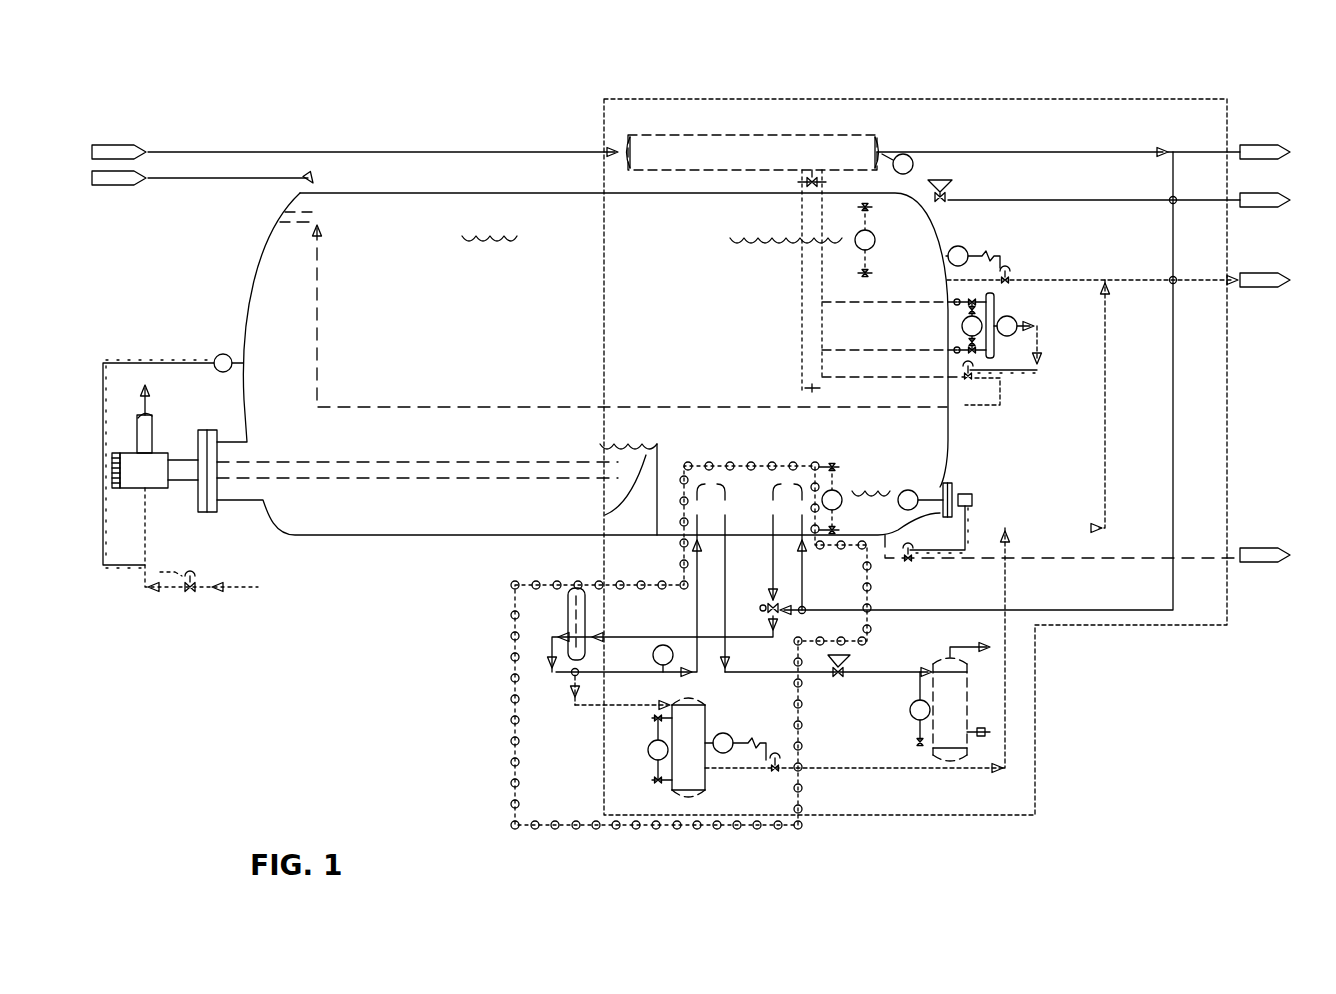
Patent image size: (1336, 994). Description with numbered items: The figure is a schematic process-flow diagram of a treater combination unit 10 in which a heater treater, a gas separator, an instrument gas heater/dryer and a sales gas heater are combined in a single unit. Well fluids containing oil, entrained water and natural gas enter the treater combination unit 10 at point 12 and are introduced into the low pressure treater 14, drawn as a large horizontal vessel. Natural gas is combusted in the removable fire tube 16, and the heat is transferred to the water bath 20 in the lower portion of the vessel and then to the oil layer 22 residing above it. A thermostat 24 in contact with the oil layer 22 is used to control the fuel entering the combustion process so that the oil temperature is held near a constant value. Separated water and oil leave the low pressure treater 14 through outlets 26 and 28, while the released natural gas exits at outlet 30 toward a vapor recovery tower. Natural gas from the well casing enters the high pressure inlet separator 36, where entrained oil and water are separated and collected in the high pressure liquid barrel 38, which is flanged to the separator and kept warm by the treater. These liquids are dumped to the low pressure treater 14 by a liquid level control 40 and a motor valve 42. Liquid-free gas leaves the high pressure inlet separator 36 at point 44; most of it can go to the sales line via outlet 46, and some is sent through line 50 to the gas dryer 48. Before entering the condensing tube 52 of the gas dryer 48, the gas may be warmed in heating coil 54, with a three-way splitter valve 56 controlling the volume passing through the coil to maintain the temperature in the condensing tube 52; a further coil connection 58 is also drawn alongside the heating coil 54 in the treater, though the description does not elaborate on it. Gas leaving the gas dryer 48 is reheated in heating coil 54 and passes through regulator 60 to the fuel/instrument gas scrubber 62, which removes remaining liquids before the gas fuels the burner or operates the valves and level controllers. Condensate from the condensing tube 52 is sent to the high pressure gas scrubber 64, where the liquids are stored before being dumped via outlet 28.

The treater combination unit 10 is at (880, 50).
The point 12 is at (172, 151).
The low pressure treater 14 is at (499, 329).
The removable fire tube 16 is at (412, 462).
The water bath 20 is at (605, 515).
The oil layer 22 is at (503, 238).
The thermostat 24 is at (222, 353).
The outlet 26 is at (1284, 551).
The outlet 28 is at (1284, 274).
The outlet 30 is at (1284, 194).
The high pressure inlet separator 36 is at (741, 164).
The high pressure liquid barrel 38 is at (754, 326).
The liquid level control 40 is at (996, 314).
The motor valve 42 is at (972, 382).
The point 44 is at (881, 150).
The outlet 46 is at (1284, 146).
The gas dryer 48 is at (513, 808).
The line 50 is at (1172, 402).
The condensing tube 52 is at (588, 622).
The heating coil 54 is at (776, 486).
The three-way splitter valve 56 is at (770, 603).
The inlet nozzle 58 is at (700, 486).
The regulator 60 is at (842, 680).
The fuel/instrument gas scrubber 62 is at (967, 726).
The high pressure gas scrubber 64 is at (704, 766).